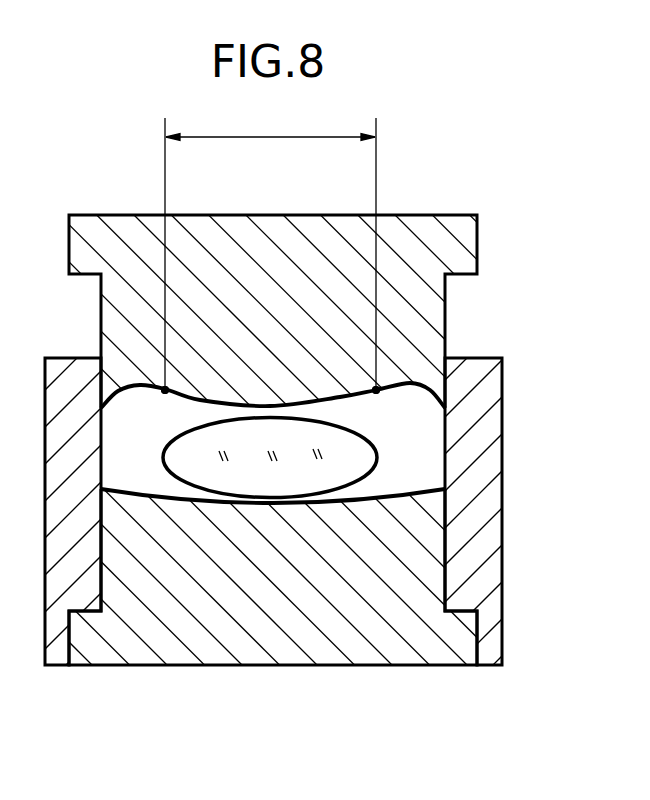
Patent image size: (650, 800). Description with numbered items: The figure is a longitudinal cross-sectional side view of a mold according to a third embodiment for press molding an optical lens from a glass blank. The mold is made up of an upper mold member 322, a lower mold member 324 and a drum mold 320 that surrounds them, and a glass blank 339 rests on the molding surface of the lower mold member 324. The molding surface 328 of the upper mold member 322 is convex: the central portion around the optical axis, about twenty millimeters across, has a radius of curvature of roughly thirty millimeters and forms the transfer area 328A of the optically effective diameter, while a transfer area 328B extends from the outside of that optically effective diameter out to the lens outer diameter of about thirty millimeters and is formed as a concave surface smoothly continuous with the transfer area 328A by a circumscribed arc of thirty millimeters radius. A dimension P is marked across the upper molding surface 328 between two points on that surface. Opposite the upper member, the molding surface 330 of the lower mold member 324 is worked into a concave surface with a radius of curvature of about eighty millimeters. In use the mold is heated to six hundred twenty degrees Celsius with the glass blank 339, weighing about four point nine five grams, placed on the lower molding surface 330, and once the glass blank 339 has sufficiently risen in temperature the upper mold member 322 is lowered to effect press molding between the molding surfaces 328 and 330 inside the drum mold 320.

The drum mold 320 is at (493, 500).
The upper mold member 322 is at (262, 230).
The lower mold member 324 is at (285, 653).
The molding surface 328 is at (360, 409).
The transfer area 328A is at (180, 398).
The transfer area 328B is at (407, 400).
The molding surface 330 is at (387, 482).
The glass blank 339 is at (243, 445).
The pitch of wavy surface P is at (270, 252).